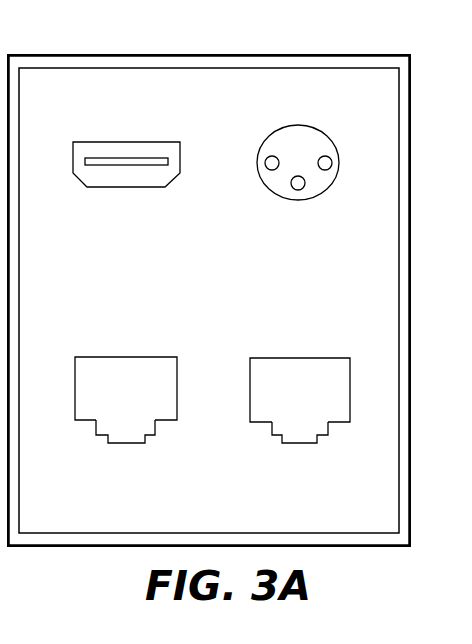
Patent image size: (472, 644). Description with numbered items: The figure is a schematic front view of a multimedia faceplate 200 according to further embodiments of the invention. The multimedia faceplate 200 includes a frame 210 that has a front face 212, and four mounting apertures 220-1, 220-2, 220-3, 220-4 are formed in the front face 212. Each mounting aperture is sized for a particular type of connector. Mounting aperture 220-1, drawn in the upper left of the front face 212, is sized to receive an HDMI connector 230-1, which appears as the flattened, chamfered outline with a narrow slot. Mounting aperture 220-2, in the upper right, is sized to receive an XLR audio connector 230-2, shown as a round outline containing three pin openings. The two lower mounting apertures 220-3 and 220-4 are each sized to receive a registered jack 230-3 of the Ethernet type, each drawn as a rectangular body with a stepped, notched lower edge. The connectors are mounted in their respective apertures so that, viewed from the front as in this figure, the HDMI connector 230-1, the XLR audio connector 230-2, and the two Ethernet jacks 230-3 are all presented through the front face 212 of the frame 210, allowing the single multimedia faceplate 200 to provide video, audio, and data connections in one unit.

The multimedia faceplate 200 is at (120, 36).
The frame 210 is at (195, 55).
The front face 212 is at (294, 90).
The mounting aperture 220-1 is at (135, 142).
The mounting aperture 220-2 is at (305, 126).
The mounting aperture 220-3 is at (100, 357).
The mounting aperture 220-4 is at (285, 358).
The HDMI connector 230-1 is at (93, 175).
The XLR audio connector 230-2 is at (327, 173).
The RJ-45 jack 230-3 is at (117, 409).